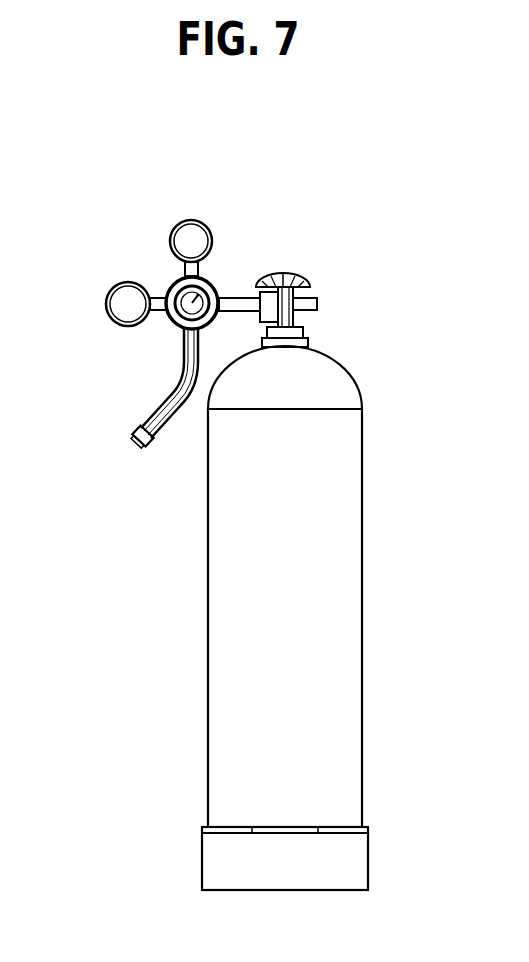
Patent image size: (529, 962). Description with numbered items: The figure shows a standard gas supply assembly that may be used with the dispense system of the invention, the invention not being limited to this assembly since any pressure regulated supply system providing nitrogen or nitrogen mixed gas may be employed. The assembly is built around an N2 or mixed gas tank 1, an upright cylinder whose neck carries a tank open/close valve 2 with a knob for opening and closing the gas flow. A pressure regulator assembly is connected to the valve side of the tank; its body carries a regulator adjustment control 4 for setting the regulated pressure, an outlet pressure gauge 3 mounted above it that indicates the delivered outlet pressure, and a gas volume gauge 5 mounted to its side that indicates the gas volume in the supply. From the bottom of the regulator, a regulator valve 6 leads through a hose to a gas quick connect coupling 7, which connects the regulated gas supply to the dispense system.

The N2 or mixed gas tank 1 is at (362, 418).
The tank open/close valve 2 is at (312, 280).
The outlet pressure gauge 3 is at (201, 224).
The regulator adjustment control 4 is at (175, 284).
The gas volume gauge 5 is at (107, 298).
The regulator valve 6 is at (183, 355).
The gas quick connect coupling 7 is at (131, 441).